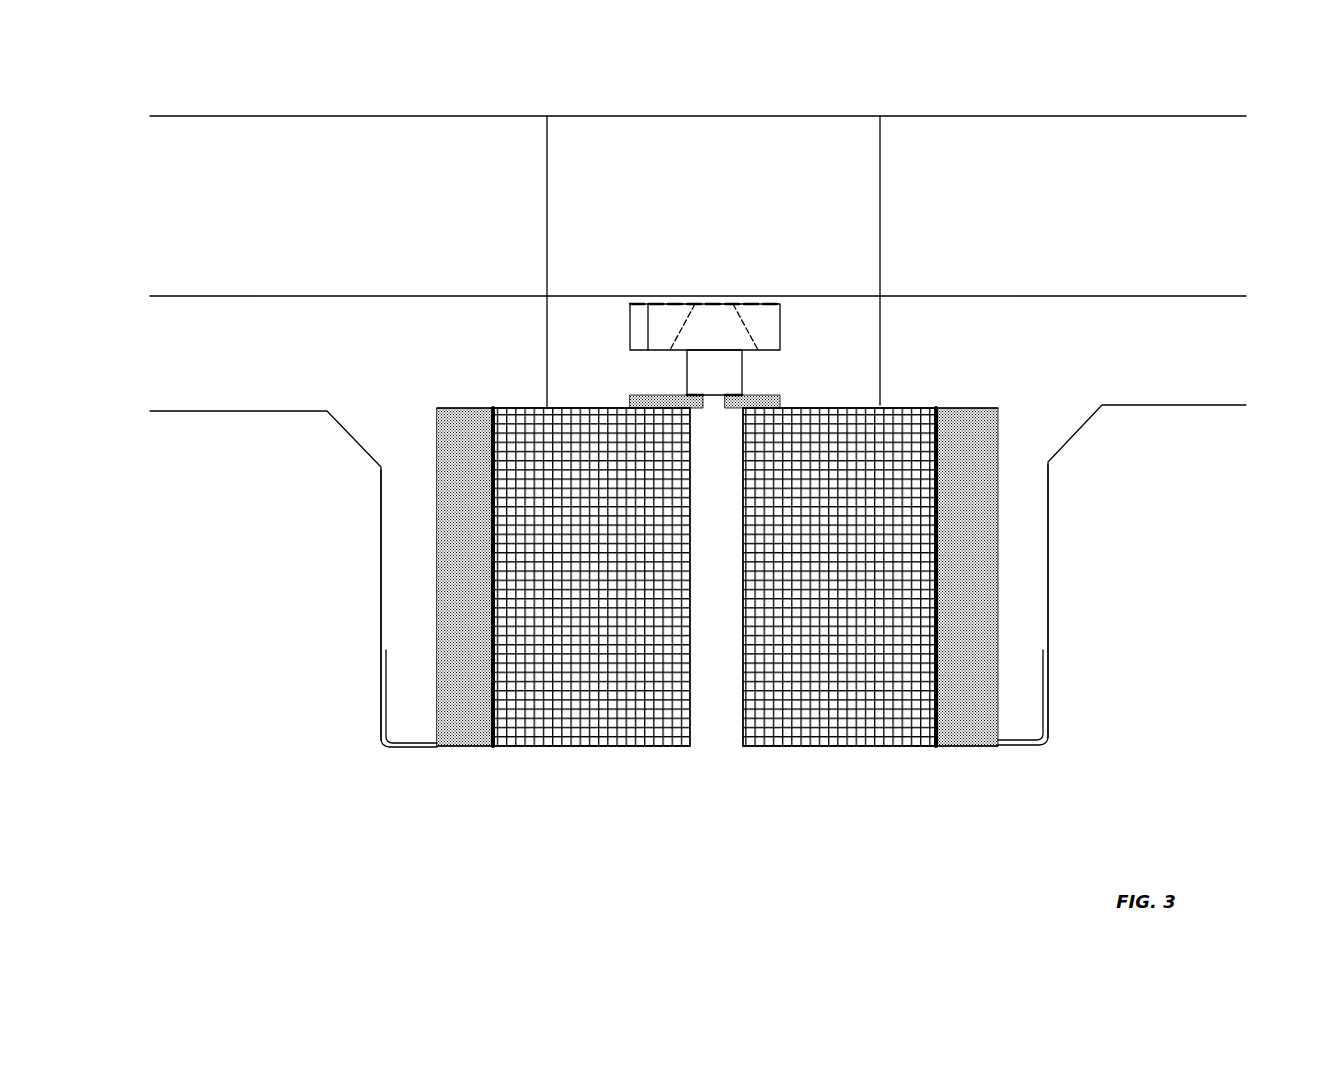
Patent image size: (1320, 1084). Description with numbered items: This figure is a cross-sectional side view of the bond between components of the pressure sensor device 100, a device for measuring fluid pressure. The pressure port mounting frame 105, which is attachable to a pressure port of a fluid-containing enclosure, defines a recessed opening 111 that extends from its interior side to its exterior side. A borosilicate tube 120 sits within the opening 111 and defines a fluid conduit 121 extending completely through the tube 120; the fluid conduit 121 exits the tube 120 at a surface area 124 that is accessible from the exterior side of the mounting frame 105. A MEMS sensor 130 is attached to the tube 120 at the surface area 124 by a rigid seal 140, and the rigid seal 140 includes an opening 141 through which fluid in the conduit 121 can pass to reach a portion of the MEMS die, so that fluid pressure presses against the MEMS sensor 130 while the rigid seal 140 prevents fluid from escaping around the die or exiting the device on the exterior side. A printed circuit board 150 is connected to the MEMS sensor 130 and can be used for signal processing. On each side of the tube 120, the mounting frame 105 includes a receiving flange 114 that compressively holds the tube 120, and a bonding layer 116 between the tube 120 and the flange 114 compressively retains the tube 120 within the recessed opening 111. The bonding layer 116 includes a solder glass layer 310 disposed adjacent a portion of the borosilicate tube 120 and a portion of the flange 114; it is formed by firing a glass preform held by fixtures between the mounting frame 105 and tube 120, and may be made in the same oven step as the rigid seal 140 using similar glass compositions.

The pressure sensor device 100 is at (718, 98).
The printed circuit board 150 is at (462, 127).
The pressure port mounting frame 105 is at (270, 387).
The receiving flange 114 is at (393, 560).
The MEMS sensor 130 is at (771, 318).
The opening 141 is at (724, 393).
The rigid seal 140 is at (762, 393).
The surface area 124 is at (627, 403).
The borosilicate tube 120 is at (810, 705).
The fluid conduit 121 is at (713, 735).
The solder glass layer 310 is at (477, 717).
The bonding layer 116 is at (466, 818).
The opening 111 is at (806, 843).